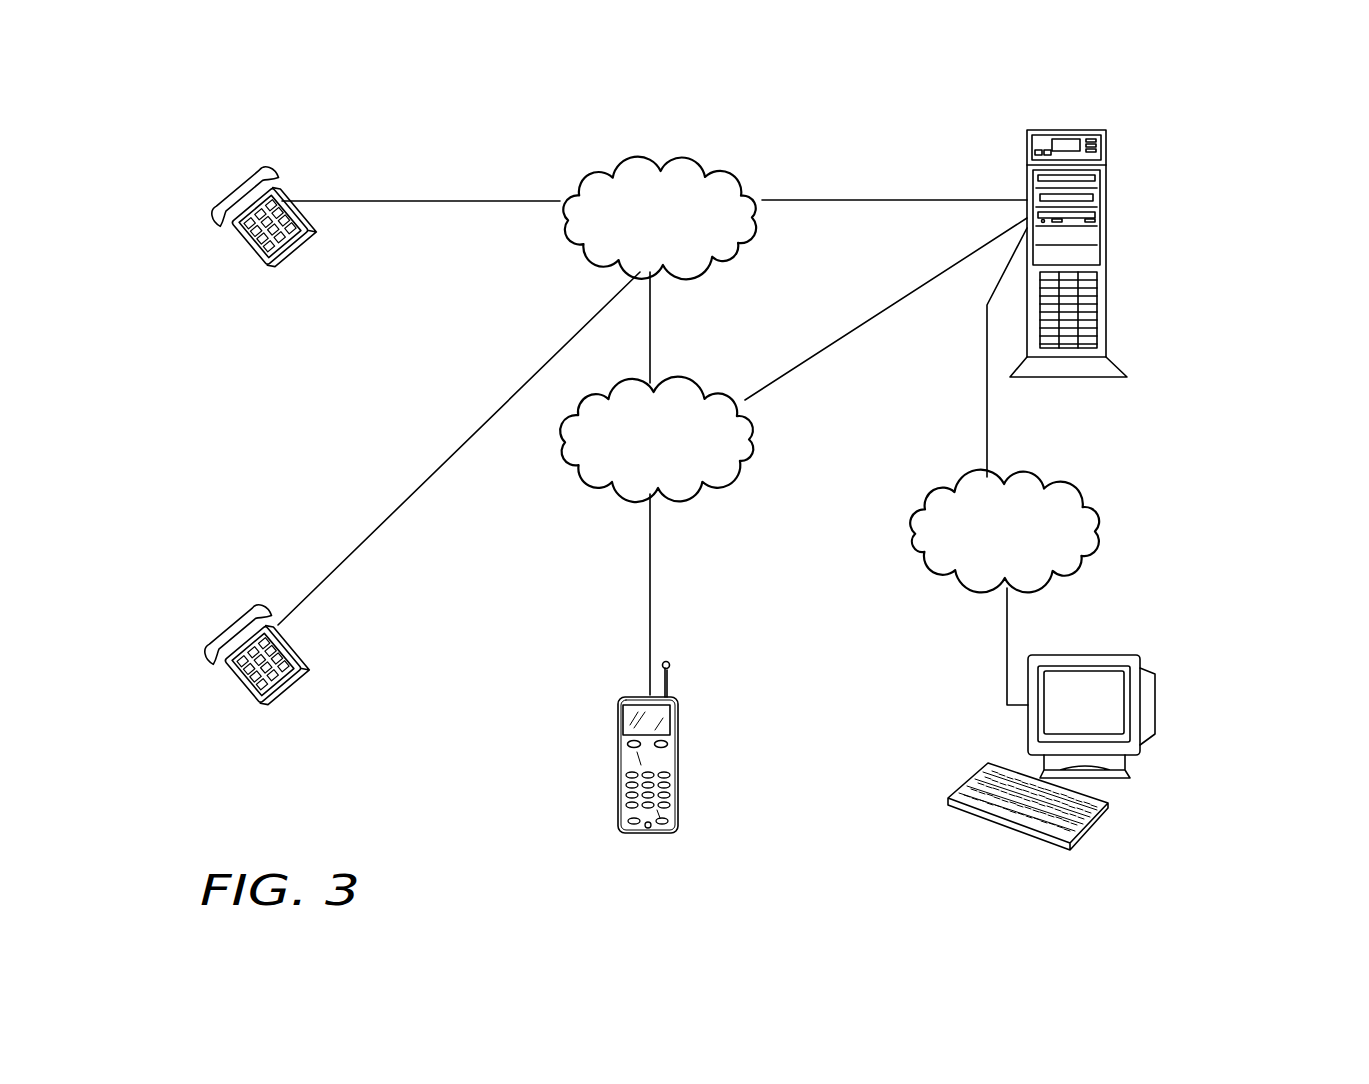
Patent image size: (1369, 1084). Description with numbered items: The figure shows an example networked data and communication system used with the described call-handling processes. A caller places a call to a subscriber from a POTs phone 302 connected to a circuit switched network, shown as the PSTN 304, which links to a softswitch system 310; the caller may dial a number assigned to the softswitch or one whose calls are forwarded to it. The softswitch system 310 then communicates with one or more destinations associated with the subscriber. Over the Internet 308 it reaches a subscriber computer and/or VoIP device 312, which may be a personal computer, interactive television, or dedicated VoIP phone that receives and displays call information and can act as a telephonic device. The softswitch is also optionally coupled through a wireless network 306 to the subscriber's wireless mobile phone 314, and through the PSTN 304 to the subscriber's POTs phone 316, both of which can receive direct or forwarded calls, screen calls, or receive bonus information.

The POTs phone 302 is at (235, 172).
The PSTN 304 is at (668, 163).
The wireless network 306 is at (702, 497).
The Internet 308 is at (1040, 477).
The softswitch system 310 is at (1107, 142).
The subscriber computer and/or VoIP device 312 is at (1090, 655).
The wireless mobile phone 314 is at (618, 710).
The POTs phone 316 is at (246, 605).